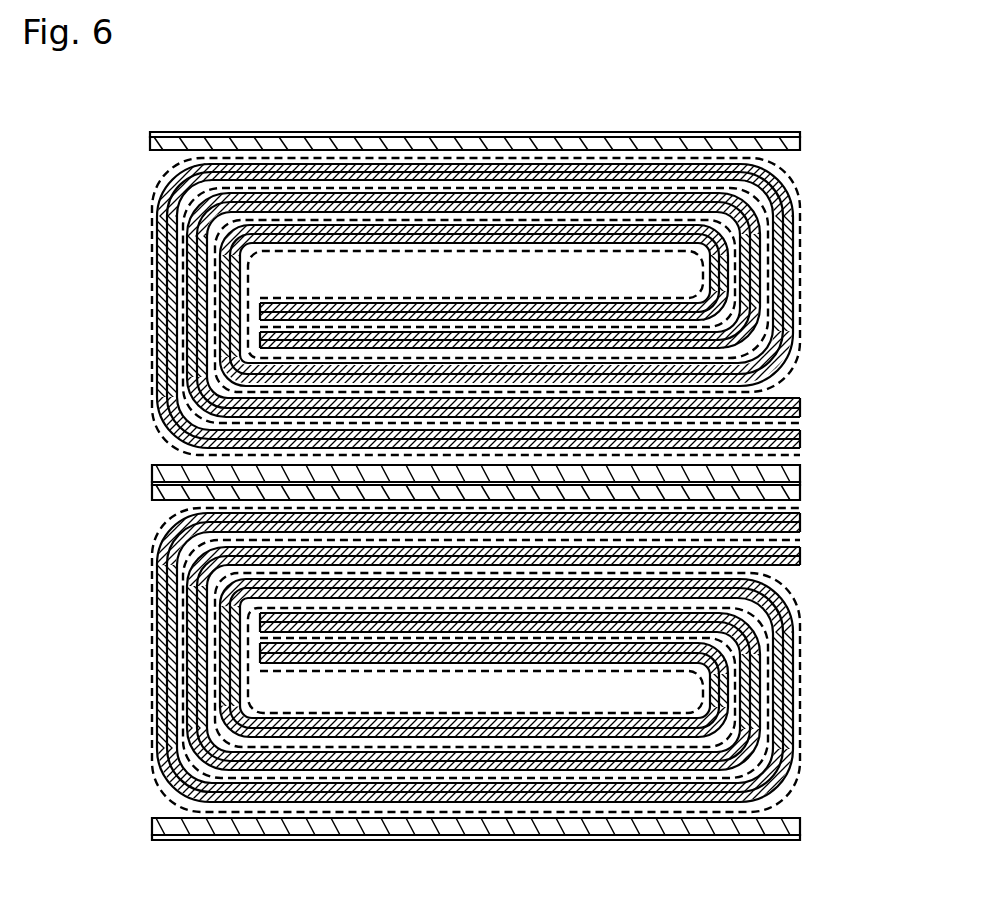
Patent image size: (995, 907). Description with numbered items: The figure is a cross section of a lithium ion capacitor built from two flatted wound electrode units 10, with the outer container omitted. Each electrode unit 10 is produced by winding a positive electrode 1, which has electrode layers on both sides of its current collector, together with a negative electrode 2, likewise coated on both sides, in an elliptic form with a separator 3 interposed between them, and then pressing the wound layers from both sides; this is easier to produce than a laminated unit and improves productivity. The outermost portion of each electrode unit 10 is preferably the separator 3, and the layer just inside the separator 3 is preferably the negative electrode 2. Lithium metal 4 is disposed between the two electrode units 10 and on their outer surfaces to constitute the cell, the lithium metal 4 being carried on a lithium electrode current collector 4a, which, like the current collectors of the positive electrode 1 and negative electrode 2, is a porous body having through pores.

The positive electrode 1 is at (410, 210).
The negative electrode 2 is at (565, 225).
The separator 3 is at (683, 192).
The lithium metal 4 is at (802, 143).
The lithium electrode current collector 4a is at (802, 133).
The electrode unit 10 is at (813, 161).